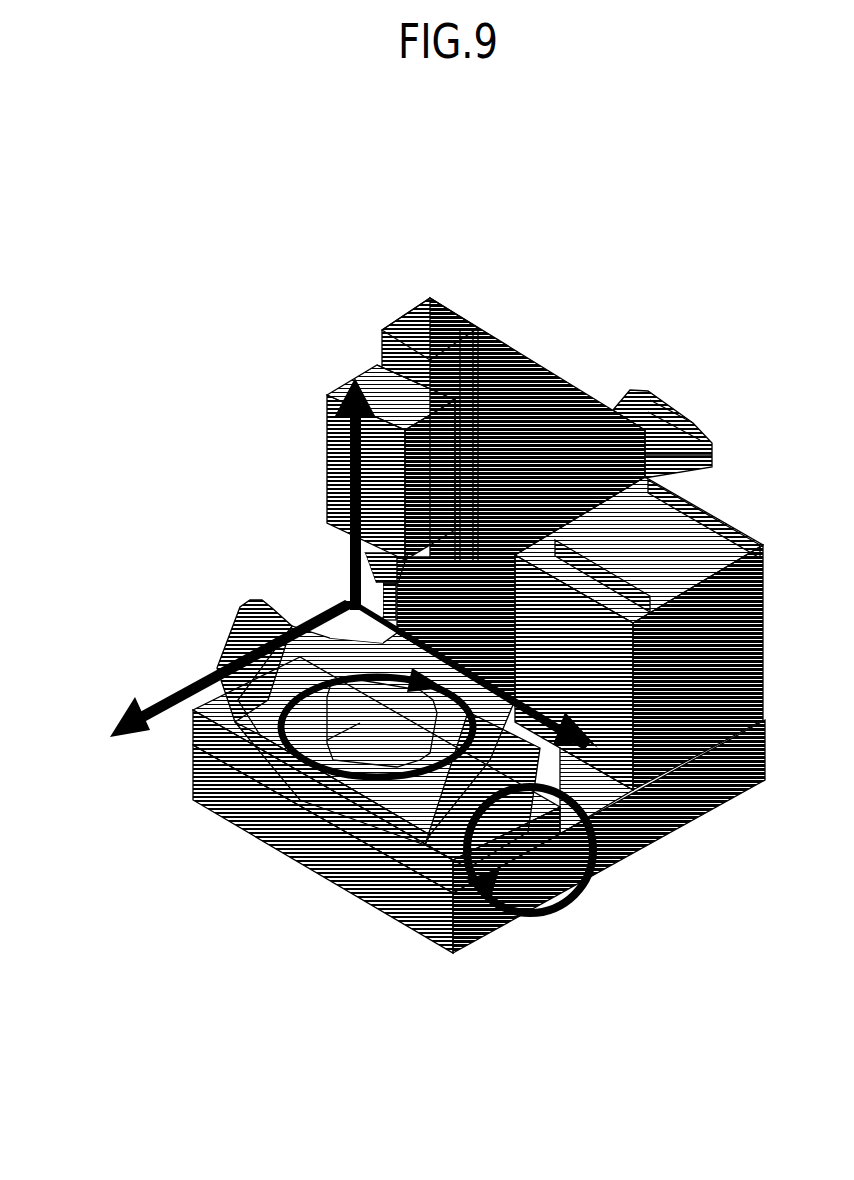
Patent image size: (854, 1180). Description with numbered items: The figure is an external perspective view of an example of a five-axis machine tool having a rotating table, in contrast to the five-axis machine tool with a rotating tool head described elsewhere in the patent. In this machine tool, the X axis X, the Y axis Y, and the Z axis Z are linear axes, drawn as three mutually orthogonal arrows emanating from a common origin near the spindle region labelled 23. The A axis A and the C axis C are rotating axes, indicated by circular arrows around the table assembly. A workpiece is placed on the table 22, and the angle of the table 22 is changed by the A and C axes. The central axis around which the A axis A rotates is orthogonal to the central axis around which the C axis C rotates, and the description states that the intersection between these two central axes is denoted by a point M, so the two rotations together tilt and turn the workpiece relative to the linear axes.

The table 22 is at (220, 803).
The spindle 23 is at (343, 594).
The X axis X is at (477, 675).
The Y axis Y is at (232, 668).
The Z axis Z is at (300, 494).
The A axis A is at (549, 906).
The C axis C is at (361, 774).